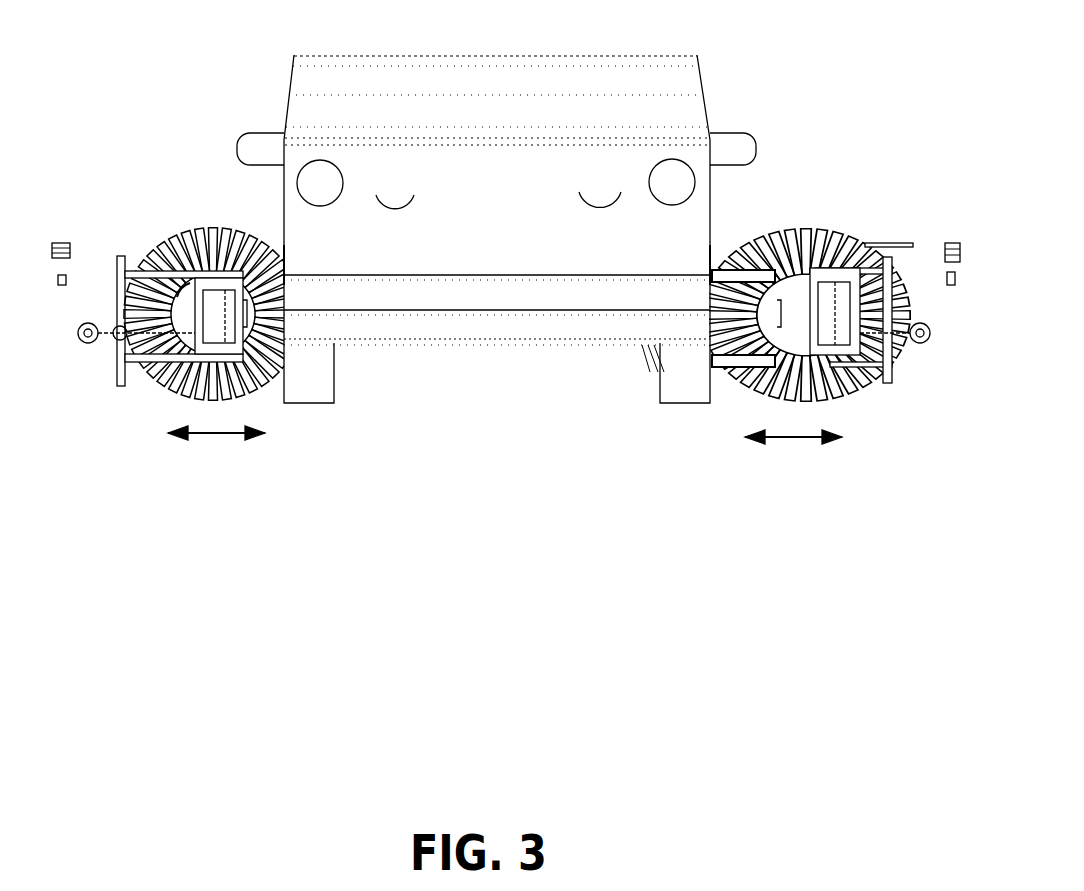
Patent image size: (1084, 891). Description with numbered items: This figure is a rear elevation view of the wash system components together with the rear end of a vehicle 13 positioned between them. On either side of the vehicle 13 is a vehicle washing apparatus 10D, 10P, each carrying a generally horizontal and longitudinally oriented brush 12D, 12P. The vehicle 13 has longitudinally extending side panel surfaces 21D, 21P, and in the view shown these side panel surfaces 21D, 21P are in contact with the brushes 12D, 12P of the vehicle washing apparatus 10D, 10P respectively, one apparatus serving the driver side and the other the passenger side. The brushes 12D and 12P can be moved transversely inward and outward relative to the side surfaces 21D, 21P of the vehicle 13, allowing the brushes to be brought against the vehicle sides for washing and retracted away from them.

The vehicle washing apparatus 10D is at (177, 263).
The vehicle washing apparatus 10P is at (831, 264).
The brush 12D is at (202, 398).
The brush 12P is at (838, 398).
The vehicle 13 is at (507, 243).
The side panel surface 21D is at (286, 261).
The side panel surface 21P is at (707, 263).